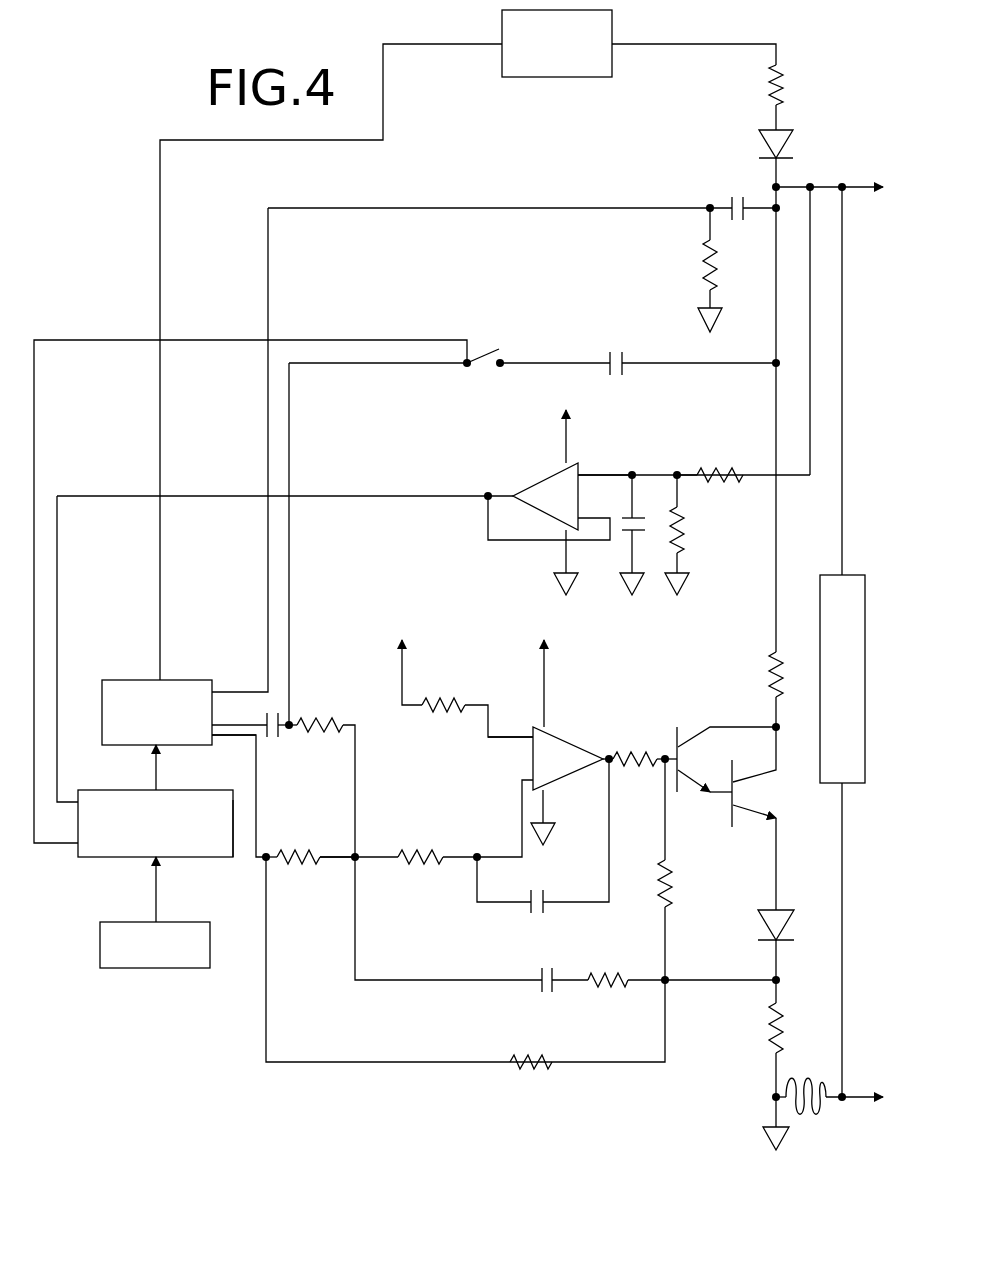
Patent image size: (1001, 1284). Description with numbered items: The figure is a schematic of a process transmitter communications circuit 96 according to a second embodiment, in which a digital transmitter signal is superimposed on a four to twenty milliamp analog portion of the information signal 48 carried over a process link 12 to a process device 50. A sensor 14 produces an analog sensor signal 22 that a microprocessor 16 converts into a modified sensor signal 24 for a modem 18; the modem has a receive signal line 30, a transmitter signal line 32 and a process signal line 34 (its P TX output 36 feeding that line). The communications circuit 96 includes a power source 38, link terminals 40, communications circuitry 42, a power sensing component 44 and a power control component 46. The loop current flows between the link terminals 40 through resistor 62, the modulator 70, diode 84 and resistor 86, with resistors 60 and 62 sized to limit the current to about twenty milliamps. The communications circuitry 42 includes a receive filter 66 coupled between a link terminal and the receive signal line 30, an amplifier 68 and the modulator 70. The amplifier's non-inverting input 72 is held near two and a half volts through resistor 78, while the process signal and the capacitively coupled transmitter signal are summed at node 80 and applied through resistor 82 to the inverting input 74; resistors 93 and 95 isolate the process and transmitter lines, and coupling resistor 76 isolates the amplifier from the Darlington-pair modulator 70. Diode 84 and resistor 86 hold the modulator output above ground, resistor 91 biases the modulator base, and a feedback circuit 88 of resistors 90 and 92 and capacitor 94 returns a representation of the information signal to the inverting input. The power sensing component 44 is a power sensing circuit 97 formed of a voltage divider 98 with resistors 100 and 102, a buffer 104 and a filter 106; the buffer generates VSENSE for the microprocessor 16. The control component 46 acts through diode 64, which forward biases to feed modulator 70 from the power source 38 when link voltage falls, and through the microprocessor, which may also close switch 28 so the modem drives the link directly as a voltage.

The process link 12 is at (826, 186).
The sensor 14 is at (130, 920).
The microprocessor 16 is at (128, 788).
The modem 18 is at (125, 678).
The sensor signal 22 is at (160, 888).
The modified sensor signal 24 is at (160, 772).
The switch 28 is at (482, 350).
The receive signal line 30 is at (268, 661).
The transmitter signal line 32 is at (270, 712).
The process signal line 34 is at (258, 768).
The P TX output 36 is at (242, 758).
The power source 38 is at (540, 78).
The link terminals 40 is at (774, 186).
The communications circuitry 42 is at (612, 690).
The power sensing component 44 is at (600, 437).
The power control component 46 is at (235, 860).
The information signal 48 is at (810, 1113).
The process device 50 is at (826, 573).
The resistor 60 is at (782, 96).
The resistor 62 is at (769, 656).
The diode 64 is at (760, 141).
The receive filter 66 is at (697, 202).
The amplifier 68 is at (471, 608).
The modulator 70 is at (700, 725).
The non-inverting input 72 is at (507, 734).
The inverting input 74 is at (490, 858).
The coupling resistor 76 is at (633, 756).
The resistor 78 is at (448, 696).
The summing node 80 is at (353, 855).
The resistor 82 is at (397, 867).
The diode 84 is at (794, 922).
The resistor 86 is at (789, 1024).
The feedback circuit 88 is at (548, 1076).
The resistor 90 is at (608, 972).
The resistor 91 is at (671, 880).
The resistor 92 is at (528, 1057).
The resistor 93 is at (291, 867).
The capacitor 94 is at (540, 974).
The resistor 95 is at (340, 720).
The process transmitter communications circuit 96 is at (365, 70).
The power sensing circuit 97 is at (600, 437).
The voltage divider 98 is at (697, 459).
The resistor 100 is at (689, 524).
The resistor 102 is at (729, 465).
The buffer 104 is at (527, 487).
The filter 106 is at (643, 521).